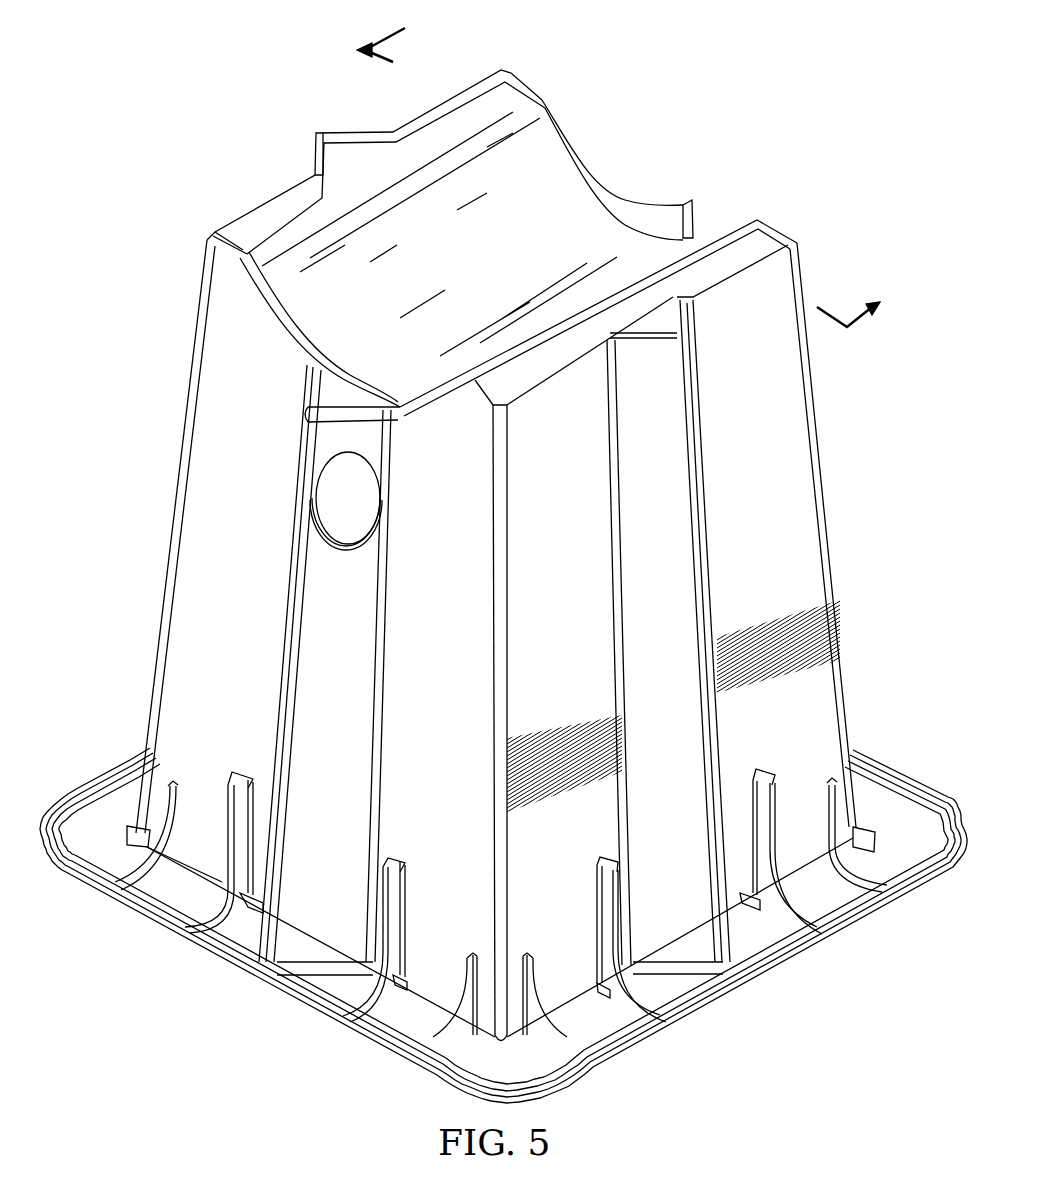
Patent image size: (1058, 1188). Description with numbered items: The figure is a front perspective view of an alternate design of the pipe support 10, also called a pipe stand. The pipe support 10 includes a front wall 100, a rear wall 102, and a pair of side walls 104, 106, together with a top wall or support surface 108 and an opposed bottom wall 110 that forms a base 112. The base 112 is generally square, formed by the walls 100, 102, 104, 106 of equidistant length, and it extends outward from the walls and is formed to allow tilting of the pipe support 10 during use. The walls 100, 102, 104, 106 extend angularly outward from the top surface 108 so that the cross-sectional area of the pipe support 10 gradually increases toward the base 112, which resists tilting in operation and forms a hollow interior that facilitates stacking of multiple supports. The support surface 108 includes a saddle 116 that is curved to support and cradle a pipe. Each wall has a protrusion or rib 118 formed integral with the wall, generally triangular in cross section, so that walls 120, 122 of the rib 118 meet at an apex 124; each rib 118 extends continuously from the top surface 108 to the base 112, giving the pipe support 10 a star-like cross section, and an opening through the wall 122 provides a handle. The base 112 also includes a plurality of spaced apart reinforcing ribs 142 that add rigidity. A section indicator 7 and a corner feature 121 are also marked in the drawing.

The section line 7- 7 is at (633, 163).
The pipe support 10 is at (688, 107).
The front wall 100 is at (815, 393).
The rear wall 102 is at (185, 418).
The side wall 104 is at (830, 530).
The side wall 106 is at (175, 497).
The top wall 108 is at (452, 113).
The bottom wall 110 is at (105, 810).
The base 112 is at (912, 779).
The saddle 116 is at (572, 178).
The rib 118 is at (314, 130).
The wall 120 is at (357, 130).
The corner ridge 121 is at (633, 553).
The wall 122 is at (312, 160).
The apex 124 is at (300, 562).
The reinforcing rib 142 is at (235, 775).